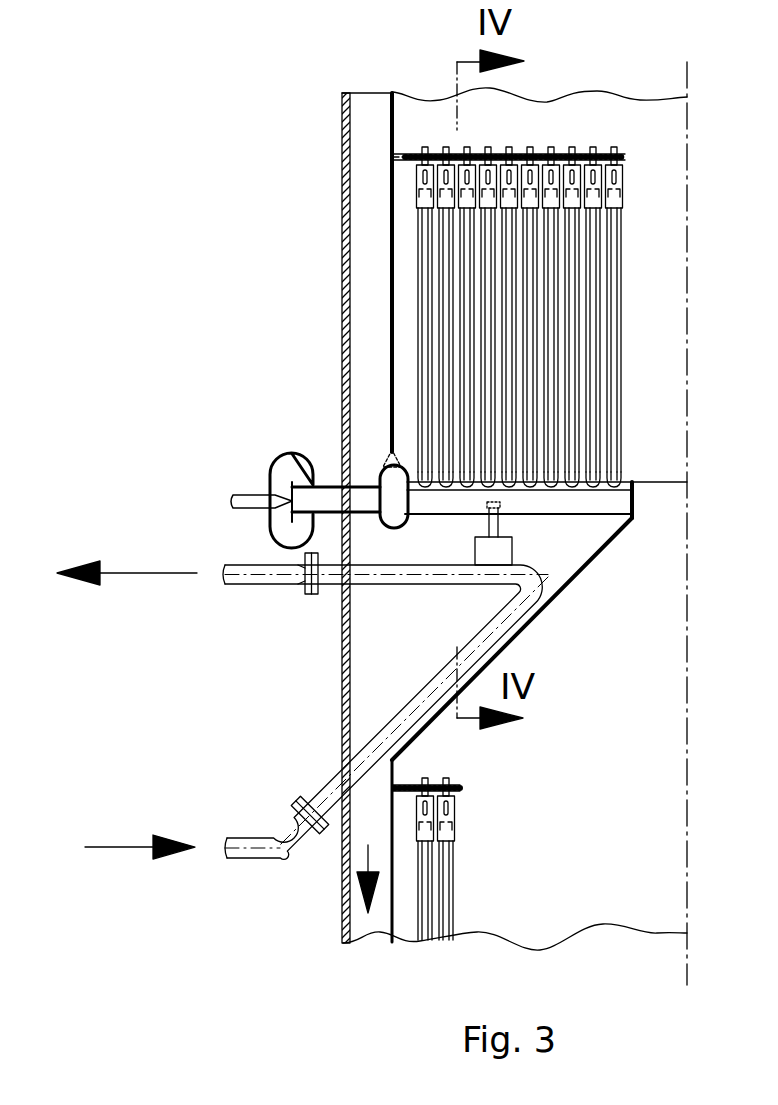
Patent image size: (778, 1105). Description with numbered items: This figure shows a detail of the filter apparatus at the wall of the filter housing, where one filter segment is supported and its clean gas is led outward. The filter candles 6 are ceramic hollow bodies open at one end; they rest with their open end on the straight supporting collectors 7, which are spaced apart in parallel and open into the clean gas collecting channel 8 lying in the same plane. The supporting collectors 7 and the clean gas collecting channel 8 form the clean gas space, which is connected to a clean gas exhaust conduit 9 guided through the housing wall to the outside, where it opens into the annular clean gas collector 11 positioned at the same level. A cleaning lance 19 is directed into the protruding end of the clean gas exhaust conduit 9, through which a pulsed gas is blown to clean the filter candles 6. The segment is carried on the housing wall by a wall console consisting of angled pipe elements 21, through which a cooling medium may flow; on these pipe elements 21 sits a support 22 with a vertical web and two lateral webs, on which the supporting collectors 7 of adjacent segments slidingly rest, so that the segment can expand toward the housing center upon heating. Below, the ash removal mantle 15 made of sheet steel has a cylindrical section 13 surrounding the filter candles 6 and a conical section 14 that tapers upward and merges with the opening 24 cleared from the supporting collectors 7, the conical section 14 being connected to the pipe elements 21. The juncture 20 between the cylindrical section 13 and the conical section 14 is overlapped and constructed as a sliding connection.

The filter candles 6 is at (594, 394).
The supporting collectors 7 is at (620, 500).
The clean gas collecting channel 8 is at (394, 517).
The clean gas exhaust conduit 9 is at (363, 507).
The annular clean gas collector 11 is at (289, 456).
The cylindrical section 13 is at (391, 243).
The conical section 14 is at (600, 553).
The ash removal mantle 15 is at (362, 320).
The cleaning lance 19 is at (233, 500).
The juncture 20 is at (395, 776).
The angled pipe elements 21 is at (477, 642).
The support 22 is at (503, 553).
The opening 24 is at (661, 487).